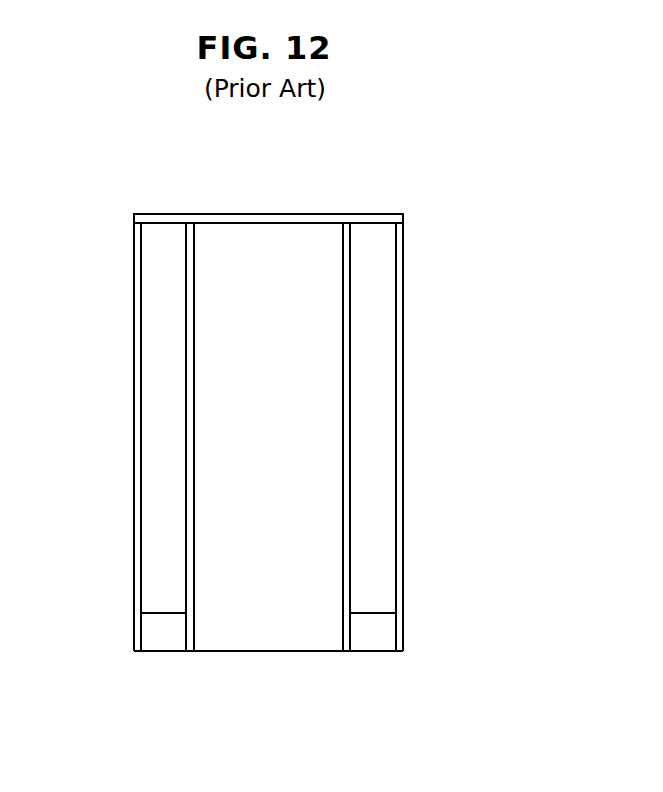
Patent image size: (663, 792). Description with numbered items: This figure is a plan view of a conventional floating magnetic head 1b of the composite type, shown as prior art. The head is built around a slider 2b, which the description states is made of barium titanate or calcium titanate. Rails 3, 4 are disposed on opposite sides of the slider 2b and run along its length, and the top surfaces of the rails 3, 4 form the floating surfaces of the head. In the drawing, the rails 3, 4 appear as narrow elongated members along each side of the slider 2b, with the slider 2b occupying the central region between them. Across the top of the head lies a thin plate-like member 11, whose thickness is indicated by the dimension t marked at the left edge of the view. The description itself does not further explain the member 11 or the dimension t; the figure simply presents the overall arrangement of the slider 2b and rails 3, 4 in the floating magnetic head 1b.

The floating magnetic head 1b is at (432, 205).
The top plate 11 is at (297, 222).
The rail 3 is at (163, 331).
The rail 4 is at (363, 322).
The slider 2b is at (291, 478).
The plate thickness t is at (134, 214).